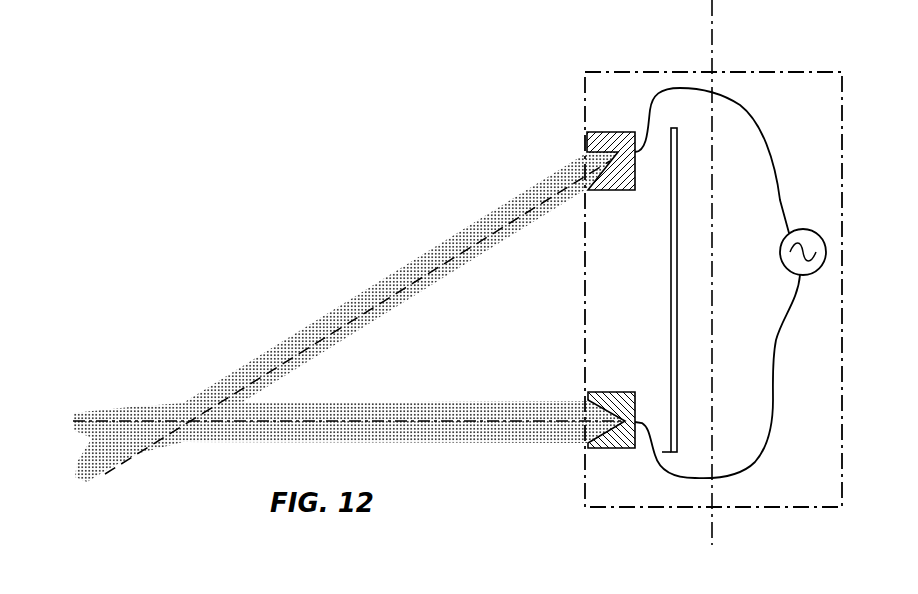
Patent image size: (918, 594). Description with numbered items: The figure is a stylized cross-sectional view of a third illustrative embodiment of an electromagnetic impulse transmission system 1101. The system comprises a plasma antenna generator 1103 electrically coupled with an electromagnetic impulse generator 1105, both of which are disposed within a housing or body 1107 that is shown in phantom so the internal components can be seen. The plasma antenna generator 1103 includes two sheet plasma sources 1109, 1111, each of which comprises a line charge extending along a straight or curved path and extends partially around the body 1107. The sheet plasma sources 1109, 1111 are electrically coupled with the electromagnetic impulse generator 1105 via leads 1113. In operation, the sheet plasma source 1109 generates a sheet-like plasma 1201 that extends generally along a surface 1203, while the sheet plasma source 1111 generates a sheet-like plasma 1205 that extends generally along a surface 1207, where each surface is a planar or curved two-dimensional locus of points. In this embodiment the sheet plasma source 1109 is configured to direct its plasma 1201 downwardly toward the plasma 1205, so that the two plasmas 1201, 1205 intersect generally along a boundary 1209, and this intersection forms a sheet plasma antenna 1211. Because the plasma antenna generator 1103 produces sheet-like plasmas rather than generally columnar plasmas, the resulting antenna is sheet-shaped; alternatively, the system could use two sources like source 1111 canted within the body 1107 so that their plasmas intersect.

The electromagnetic impulse transmission system 1101 is at (558, 65).
The plasma antenna generator 1103 is at (678, 250).
The electromagnetic impulse generator 1105 is at (810, 230).
The housing or body 1107 is at (637, 72).
The sheet plasma source 1109 is at (586, 133).
The sheet plasma source 1111 is at (588, 448).
The leads 1113 is at (720, 100).
The sheet-like plasma 1201 is at (413, 280).
The surface 1203 is at (368, 290).
The sheet-like plasma 1205 is at (300, 441).
The surface 1207 is at (410, 422).
The boundary 1209 is at (190, 421).
The sheet plasma antenna 1211 is at (245, 356).